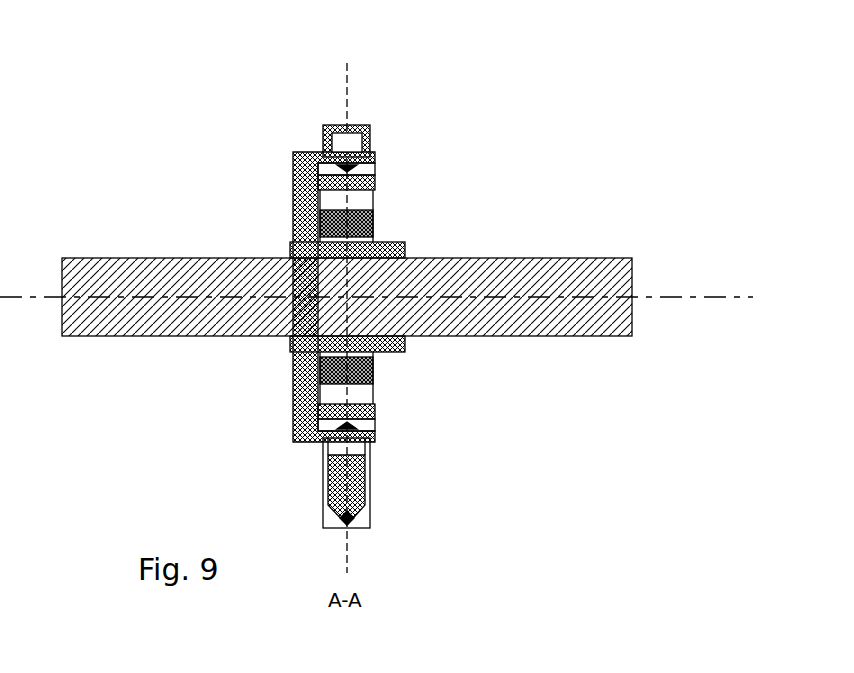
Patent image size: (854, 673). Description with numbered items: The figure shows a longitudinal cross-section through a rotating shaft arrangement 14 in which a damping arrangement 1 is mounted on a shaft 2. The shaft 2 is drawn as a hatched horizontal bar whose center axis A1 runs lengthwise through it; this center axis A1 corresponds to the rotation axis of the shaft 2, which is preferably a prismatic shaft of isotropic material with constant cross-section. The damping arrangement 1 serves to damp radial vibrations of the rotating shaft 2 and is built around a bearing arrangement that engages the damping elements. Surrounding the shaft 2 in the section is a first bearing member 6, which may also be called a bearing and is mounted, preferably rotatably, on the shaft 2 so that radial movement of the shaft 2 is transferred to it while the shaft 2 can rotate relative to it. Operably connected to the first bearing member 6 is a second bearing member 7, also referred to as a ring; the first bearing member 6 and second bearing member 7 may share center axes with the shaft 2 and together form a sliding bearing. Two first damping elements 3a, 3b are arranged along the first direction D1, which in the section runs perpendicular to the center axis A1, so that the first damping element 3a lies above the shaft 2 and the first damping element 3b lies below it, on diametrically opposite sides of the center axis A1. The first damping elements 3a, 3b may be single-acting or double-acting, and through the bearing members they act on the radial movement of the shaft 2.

The damping arrangement 1 is at (273, 193).
The shaft 2 is at (553, 277).
The first damping element 3a is at (337, 110).
The first damping element 3b is at (338, 502).
The first bearing member 6 is at (405, 248).
The second bearing member 7 is at (372, 220).
The rotating shaft arrangement 14 is at (575, 110).
The first direction D1 is at (348, 75).
The center axis A1 is at (693, 297).